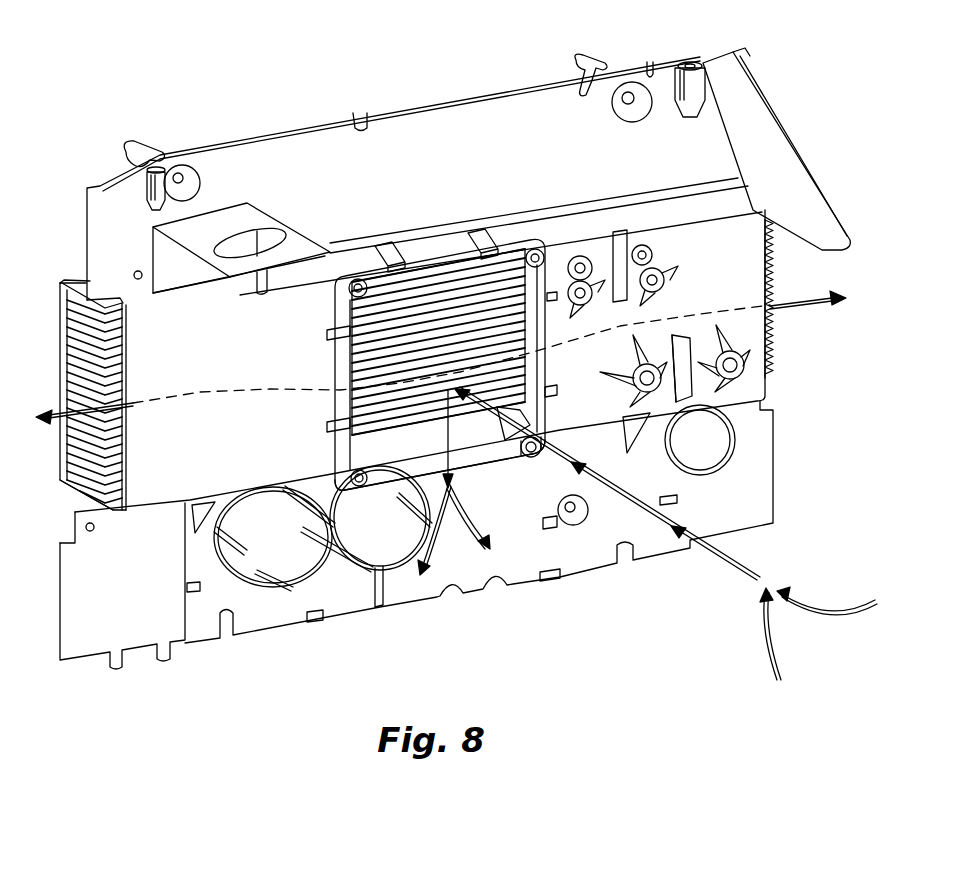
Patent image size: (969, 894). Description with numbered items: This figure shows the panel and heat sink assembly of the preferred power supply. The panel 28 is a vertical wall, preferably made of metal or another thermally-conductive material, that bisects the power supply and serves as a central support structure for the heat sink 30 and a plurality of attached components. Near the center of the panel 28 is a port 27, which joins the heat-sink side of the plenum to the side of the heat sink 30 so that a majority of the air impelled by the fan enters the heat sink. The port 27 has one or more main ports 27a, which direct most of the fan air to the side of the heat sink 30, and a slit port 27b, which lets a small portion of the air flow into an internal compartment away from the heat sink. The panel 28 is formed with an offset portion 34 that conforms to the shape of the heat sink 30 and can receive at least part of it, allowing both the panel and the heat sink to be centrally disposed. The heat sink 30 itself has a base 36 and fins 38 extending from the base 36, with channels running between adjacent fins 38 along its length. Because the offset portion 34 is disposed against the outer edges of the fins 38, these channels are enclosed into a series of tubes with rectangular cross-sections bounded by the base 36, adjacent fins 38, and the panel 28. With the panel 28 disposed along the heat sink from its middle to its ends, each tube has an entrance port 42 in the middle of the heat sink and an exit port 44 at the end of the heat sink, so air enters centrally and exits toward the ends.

The port 27 is at (446, 340).
The main port 27a is at (479, 288).
The slit port 27b is at (497, 452).
The panel 28 is at (763, 473).
The heat sink 30 is at (60, 374).
The offset portion 34 is at (753, 324).
The base 36 is at (60, 291).
The fins 38 is at (67, 481).
The entrance port 42 is at (397, 292).
The exit port 44 is at (57, 448).